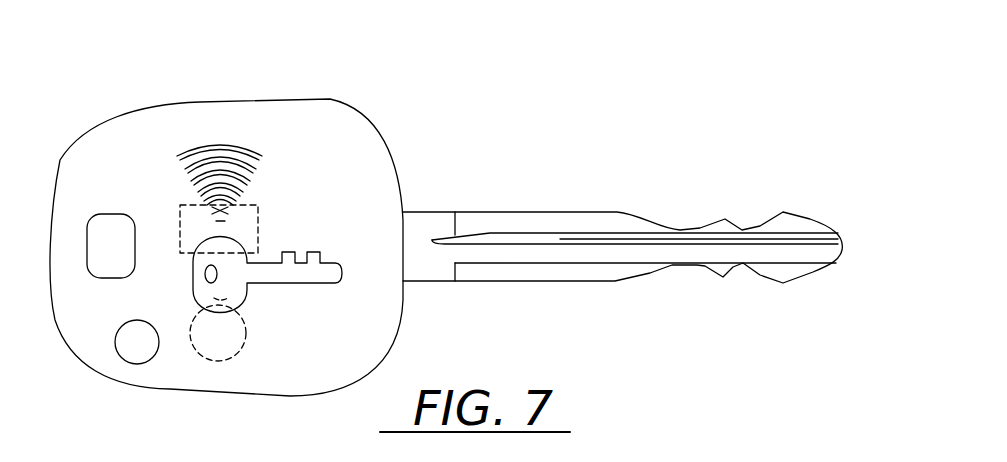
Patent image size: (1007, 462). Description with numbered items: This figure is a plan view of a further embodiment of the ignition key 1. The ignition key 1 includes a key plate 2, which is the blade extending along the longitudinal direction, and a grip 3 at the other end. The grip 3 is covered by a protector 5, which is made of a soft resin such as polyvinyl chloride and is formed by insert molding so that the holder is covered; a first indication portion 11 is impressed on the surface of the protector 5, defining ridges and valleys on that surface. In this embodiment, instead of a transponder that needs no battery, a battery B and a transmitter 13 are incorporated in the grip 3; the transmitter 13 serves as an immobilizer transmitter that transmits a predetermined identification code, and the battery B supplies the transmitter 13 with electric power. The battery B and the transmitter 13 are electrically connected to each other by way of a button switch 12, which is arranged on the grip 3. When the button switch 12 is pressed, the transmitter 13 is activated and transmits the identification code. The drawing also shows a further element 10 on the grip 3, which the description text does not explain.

The ignition key 1 is at (496, 108).
The key plate 2 is at (447, 212).
The grip 3 is at (307, 56).
The protector 5 is at (158, 104).
The rectangular button 10 is at (90, 250).
The first indication portion 11 is at (277, 317).
The button switch 12 is at (127, 363).
The transmitter 13 is at (262, 213).
The battery B is at (246, 358).